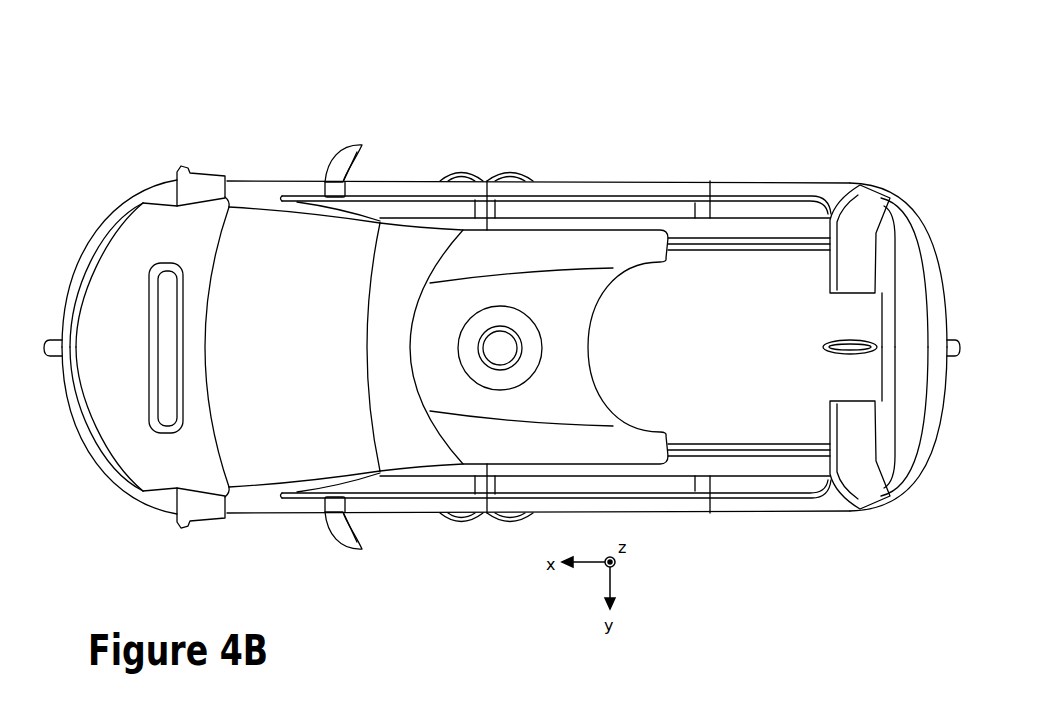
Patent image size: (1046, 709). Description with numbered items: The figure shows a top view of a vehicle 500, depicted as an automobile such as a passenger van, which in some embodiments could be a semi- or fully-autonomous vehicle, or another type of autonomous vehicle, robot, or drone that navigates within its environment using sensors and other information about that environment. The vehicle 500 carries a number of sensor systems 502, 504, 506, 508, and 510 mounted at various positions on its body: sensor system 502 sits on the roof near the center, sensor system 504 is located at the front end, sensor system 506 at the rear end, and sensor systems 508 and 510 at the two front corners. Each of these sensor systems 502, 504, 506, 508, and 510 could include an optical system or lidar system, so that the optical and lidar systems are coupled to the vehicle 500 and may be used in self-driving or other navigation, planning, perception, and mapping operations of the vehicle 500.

The vehicle 500 is at (502, 299).
The sensor system 502 is at (510, 307).
The sensor system 504 is at (45, 340).
The sensor system 506 is at (953, 340).
The sensor system 508 is at (185, 170).
The sensor system 510 is at (187, 527).